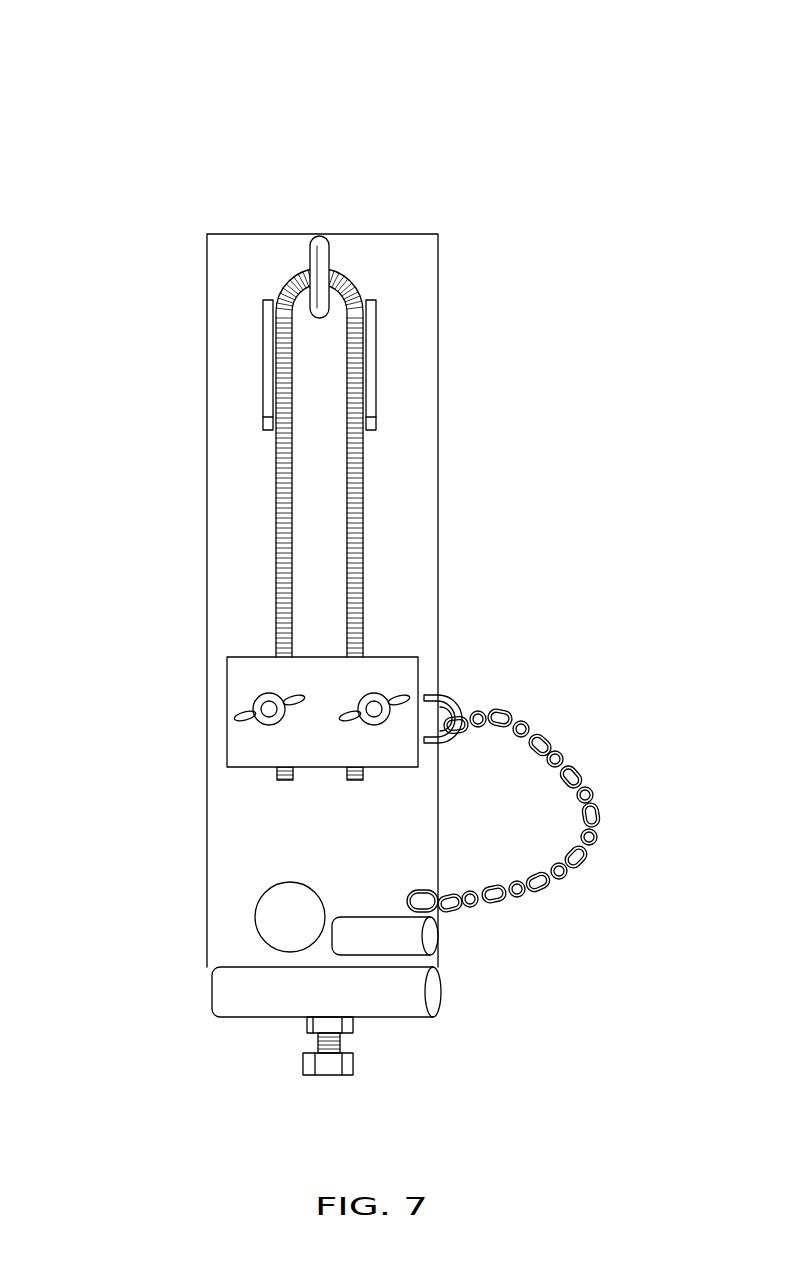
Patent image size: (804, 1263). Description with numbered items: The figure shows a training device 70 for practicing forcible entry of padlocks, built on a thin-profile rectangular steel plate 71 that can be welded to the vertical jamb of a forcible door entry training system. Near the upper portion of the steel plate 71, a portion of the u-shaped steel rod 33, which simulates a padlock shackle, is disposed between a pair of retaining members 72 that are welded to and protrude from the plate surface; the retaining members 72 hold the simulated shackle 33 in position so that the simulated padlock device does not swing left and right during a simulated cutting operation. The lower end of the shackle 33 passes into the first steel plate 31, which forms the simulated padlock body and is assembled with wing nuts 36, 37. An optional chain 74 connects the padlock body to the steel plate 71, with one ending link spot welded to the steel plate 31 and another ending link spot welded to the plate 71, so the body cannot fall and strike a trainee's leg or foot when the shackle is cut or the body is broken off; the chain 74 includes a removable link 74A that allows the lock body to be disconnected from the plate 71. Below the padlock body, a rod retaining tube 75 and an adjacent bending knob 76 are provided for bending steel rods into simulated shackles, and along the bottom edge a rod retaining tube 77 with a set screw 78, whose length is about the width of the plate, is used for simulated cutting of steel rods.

The training device 70 is at (623, 103).
The rectangular steel plate 71 is at (420, 283).
The retaining members 72 is at (267, 362).
The u-shaped steel rod 33 is at (363, 558).
The chain 74 is at (338, 242).
The first steel plate 31 is at (392, 655).
The wing nut 37 is at (230, 717).
The wing nut 36 is at (410, 697).
The bending knob 76 is at (292, 882).
The rod retaining tube 75 is at (388, 917).
The removable link 74A is at (447, 917).
The rod retaining tube 77 is at (228, 988).
The set screw 78 is at (307, 1033).